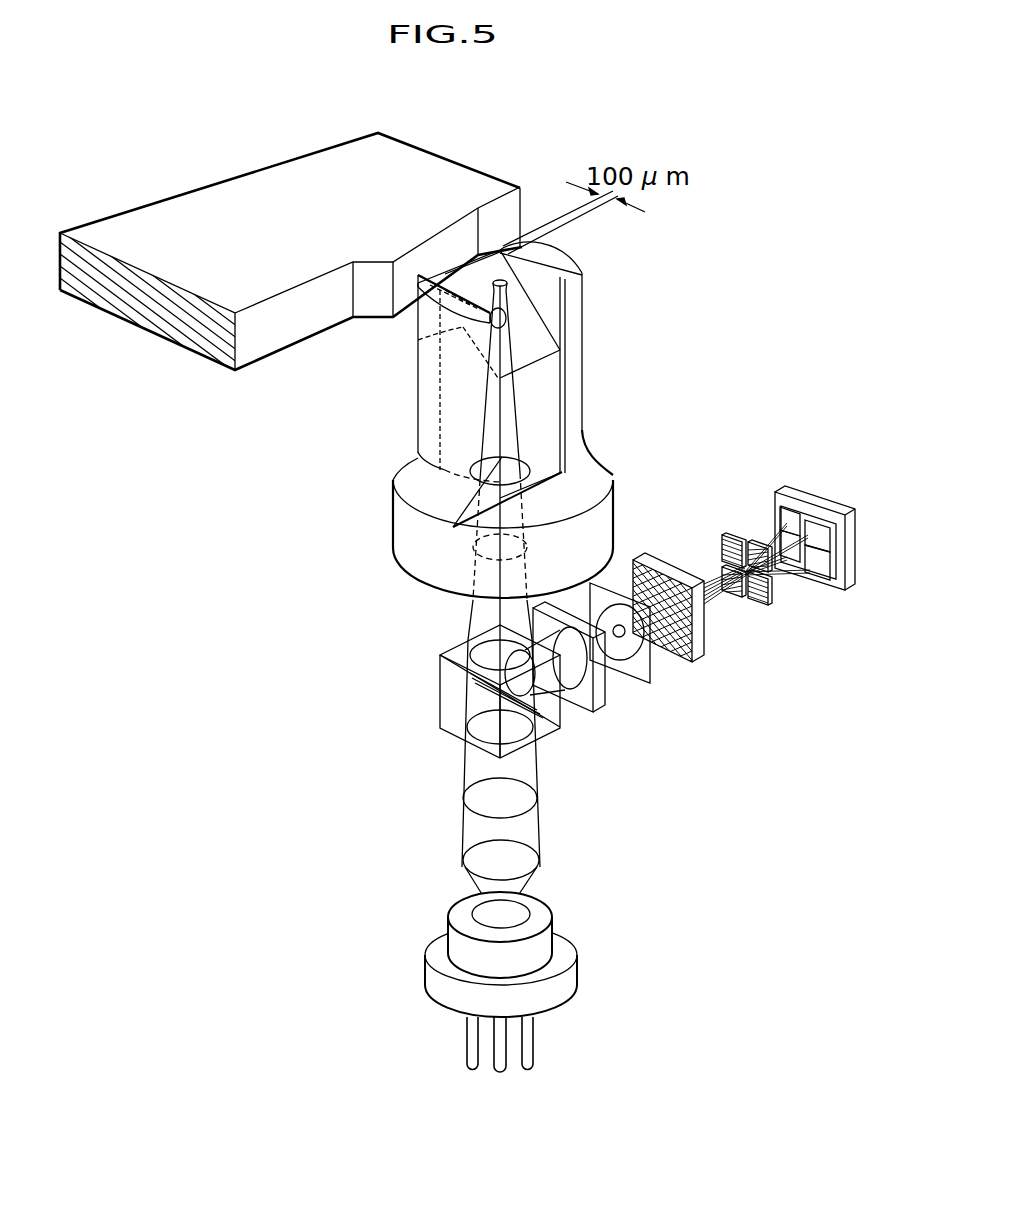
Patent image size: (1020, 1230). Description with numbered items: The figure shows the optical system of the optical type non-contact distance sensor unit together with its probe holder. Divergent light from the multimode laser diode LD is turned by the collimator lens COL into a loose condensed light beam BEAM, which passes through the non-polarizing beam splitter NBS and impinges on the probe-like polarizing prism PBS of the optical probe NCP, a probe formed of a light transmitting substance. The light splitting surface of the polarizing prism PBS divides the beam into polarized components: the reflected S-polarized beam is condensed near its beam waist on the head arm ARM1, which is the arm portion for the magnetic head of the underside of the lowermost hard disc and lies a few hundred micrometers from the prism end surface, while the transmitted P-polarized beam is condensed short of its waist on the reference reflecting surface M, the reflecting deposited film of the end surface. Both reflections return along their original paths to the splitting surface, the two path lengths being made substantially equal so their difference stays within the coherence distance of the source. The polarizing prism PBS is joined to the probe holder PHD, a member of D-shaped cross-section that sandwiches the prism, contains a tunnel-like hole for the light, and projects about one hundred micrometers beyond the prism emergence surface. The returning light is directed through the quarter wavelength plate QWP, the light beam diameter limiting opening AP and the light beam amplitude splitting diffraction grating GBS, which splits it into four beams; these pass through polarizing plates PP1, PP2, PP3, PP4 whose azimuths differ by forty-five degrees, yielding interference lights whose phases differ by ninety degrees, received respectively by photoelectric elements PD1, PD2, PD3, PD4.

The head arm ARM1 is at (447, 180).
The reference reflecting surface M is at (530, 275).
The probe-like polarizing prism PBS is at (463, 328).
The optical probe NCP is at (550, 390).
The probe holder PHD is at (577, 440).
The non-polarizing beam splitter NBS is at (440, 690).
The light beam BEAM is at (463, 758).
The collimator lens COL is at (462, 830).
The multimode laser diode LD is at (448, 928).
The quarter wavelength plate QWP is at (585, 705).
The light beam diameter limiting opening AP is at (620, 640).
The light beam amplitude splitting diffraction grating GBS is at (670, 657).
The polarizing plate PP1 is at (752, 610).
The polarizing plate PP2 is at (773, 597).
The polarizing plate PP3 is at (727, 538).
The polarizing plate PP4 is at (720, 560).
The photoelectric element PD1 is at (843, 592).
The photoelectric element PD2 is at (815, 525).
The photoelectric element PD3 is at (790, 520).
The photoelectric element PD4 is at (775, 530).